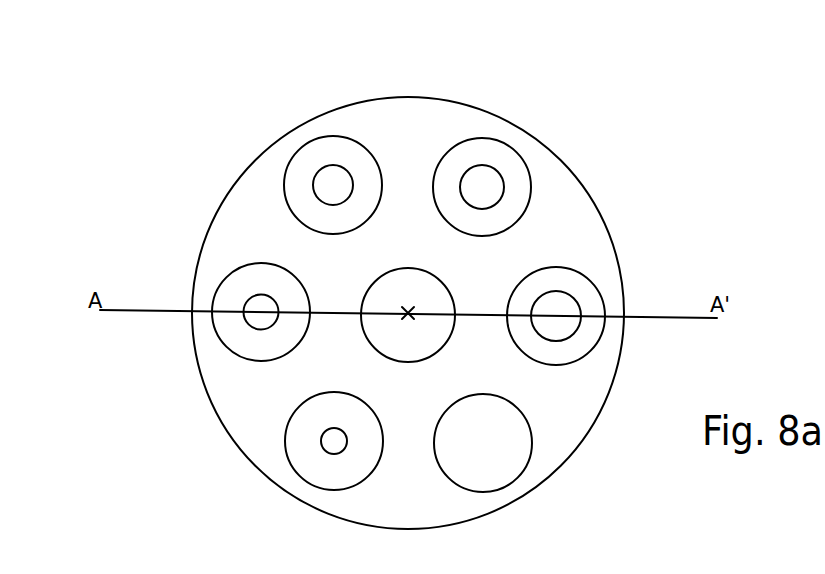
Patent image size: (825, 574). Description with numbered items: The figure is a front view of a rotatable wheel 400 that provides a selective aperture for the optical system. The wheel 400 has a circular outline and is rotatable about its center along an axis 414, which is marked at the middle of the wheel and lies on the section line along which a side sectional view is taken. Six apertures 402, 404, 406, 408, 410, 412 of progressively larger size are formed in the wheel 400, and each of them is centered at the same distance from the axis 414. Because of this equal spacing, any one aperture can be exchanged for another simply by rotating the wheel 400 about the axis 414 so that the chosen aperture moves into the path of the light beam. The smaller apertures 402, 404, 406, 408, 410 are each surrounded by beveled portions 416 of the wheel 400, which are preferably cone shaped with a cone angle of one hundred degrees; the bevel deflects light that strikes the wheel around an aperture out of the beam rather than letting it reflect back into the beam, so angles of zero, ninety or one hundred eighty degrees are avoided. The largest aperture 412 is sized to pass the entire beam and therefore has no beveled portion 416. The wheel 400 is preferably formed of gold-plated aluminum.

The rotatable wheel 400 is at (225, 197).
The aperture 402 is at (322, 450).
The aperture 404 is at (257, 294).
The aperture 406 is at (330, 172).
The aperture 408 is at (497, 170).
The aperture 410 is at (578, 302).
The aperture 412 is at (530, 470).
The axis 414 is at (409, 308).
The beveled portions 416 is at (463, 160).